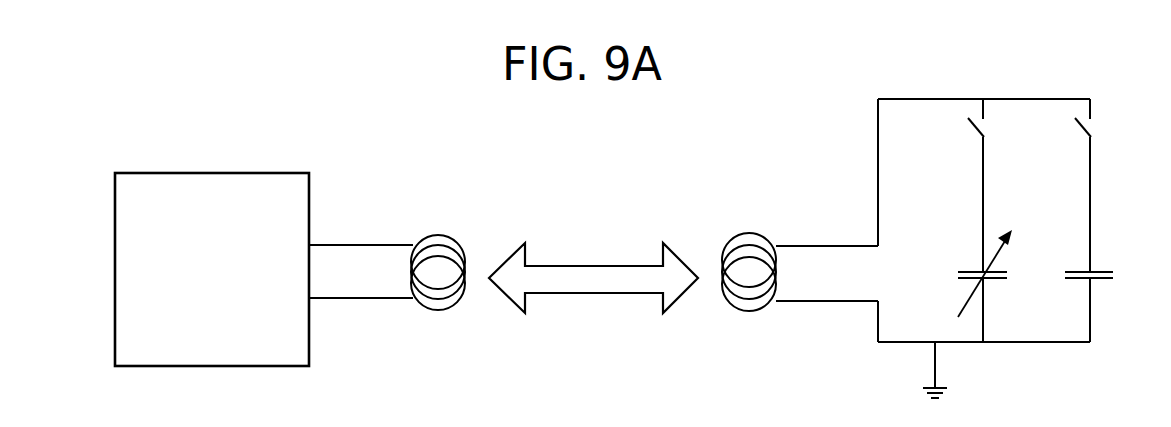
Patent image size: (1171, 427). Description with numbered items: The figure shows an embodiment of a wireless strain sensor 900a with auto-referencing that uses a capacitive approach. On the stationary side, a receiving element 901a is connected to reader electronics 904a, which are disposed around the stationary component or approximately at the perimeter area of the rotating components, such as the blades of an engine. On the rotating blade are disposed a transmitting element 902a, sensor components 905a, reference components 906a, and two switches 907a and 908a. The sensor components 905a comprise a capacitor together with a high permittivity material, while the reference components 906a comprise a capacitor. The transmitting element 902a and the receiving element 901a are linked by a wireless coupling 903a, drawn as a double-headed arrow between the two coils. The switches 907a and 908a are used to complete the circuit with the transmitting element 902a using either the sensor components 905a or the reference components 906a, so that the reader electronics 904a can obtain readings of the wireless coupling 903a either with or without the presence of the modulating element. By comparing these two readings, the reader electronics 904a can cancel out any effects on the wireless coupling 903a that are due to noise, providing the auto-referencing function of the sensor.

The wireless power transfer system 900a is at (261, 125).
The receiving element 901a is at (432, 233).
The transmitting element 902a is at (753, 233).
The wireless coupling 903a is at (590, 293).
The reader electronics 904a is at (173, 366).
The sensor components 905a is at (978, 272).
The reference components 906a is at (1082, 272).
The switch 907a is at (963, 138).
The switch 908a is at (1069, 139).